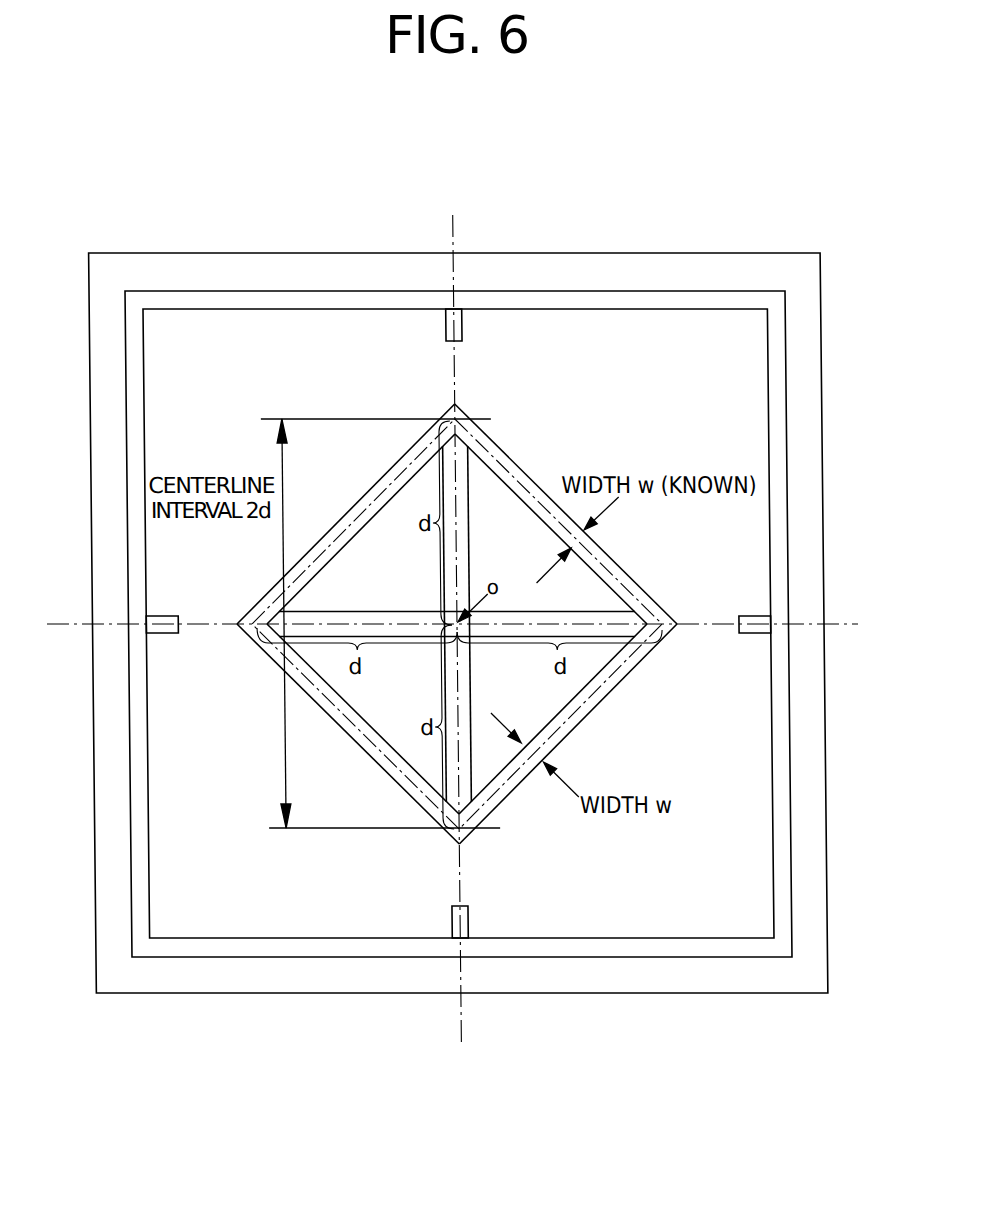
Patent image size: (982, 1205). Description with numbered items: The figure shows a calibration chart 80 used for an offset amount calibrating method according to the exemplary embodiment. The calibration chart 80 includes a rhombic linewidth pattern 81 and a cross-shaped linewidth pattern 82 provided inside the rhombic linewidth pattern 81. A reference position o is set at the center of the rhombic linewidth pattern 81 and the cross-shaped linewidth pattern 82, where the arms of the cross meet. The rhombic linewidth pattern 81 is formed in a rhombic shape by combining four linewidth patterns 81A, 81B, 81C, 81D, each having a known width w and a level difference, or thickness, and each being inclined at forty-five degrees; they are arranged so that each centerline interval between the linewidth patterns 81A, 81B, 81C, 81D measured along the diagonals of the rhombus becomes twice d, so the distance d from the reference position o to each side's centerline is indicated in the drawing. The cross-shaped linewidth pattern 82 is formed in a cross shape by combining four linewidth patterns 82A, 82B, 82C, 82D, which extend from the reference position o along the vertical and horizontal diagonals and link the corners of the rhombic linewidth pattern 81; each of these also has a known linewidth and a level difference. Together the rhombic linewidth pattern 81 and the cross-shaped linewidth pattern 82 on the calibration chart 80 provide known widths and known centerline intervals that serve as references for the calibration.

The calibration chart 80 is at (690, 191).
The rhombic linewidth pattern 81 is at (470, 623).
The linewidth pattern 81A is at (648, 592).
The linewidth pattern 81B is at (603, 698).
The linewidth pattern 81C is at (357, 742).
The linewidth pattern 81D is at (353, 510).
The cross-shaped linewidth pattern 82 is at (457, 624).
The linewidth pattern 82A is at (568, 612).
The linewidth pattern 82B is at (470, 679).
The linewidth pattern 82C is at (350, 612).
The linewidth pattern 82D is at (470, 531).